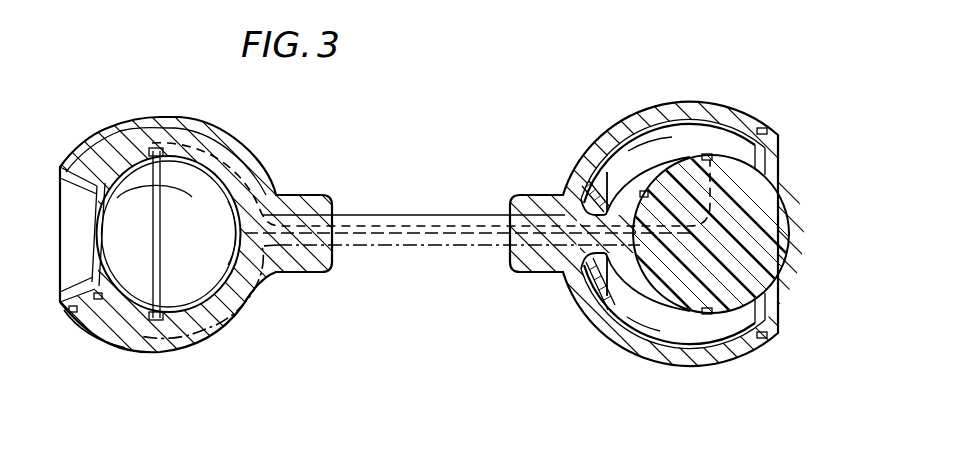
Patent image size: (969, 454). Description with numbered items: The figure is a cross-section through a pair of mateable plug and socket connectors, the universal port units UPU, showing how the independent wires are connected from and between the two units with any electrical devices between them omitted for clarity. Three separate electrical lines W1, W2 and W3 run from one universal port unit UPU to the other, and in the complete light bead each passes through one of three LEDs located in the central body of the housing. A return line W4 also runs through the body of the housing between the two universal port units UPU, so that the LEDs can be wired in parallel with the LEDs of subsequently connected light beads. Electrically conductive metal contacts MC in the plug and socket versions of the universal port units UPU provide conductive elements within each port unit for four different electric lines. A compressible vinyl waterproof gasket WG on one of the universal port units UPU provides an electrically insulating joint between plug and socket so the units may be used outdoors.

The electrical line W1 is at (380, 248).
The electrical line W2 is at (368, 213).
The electrical line W3 is at (448, 250).
The return line W4 is at (438, 222).
The universal port unit UPU is at (236, 305).
The metal contacts MC is at (160, 320).
The waterproof gasket WG is at (767, 128).